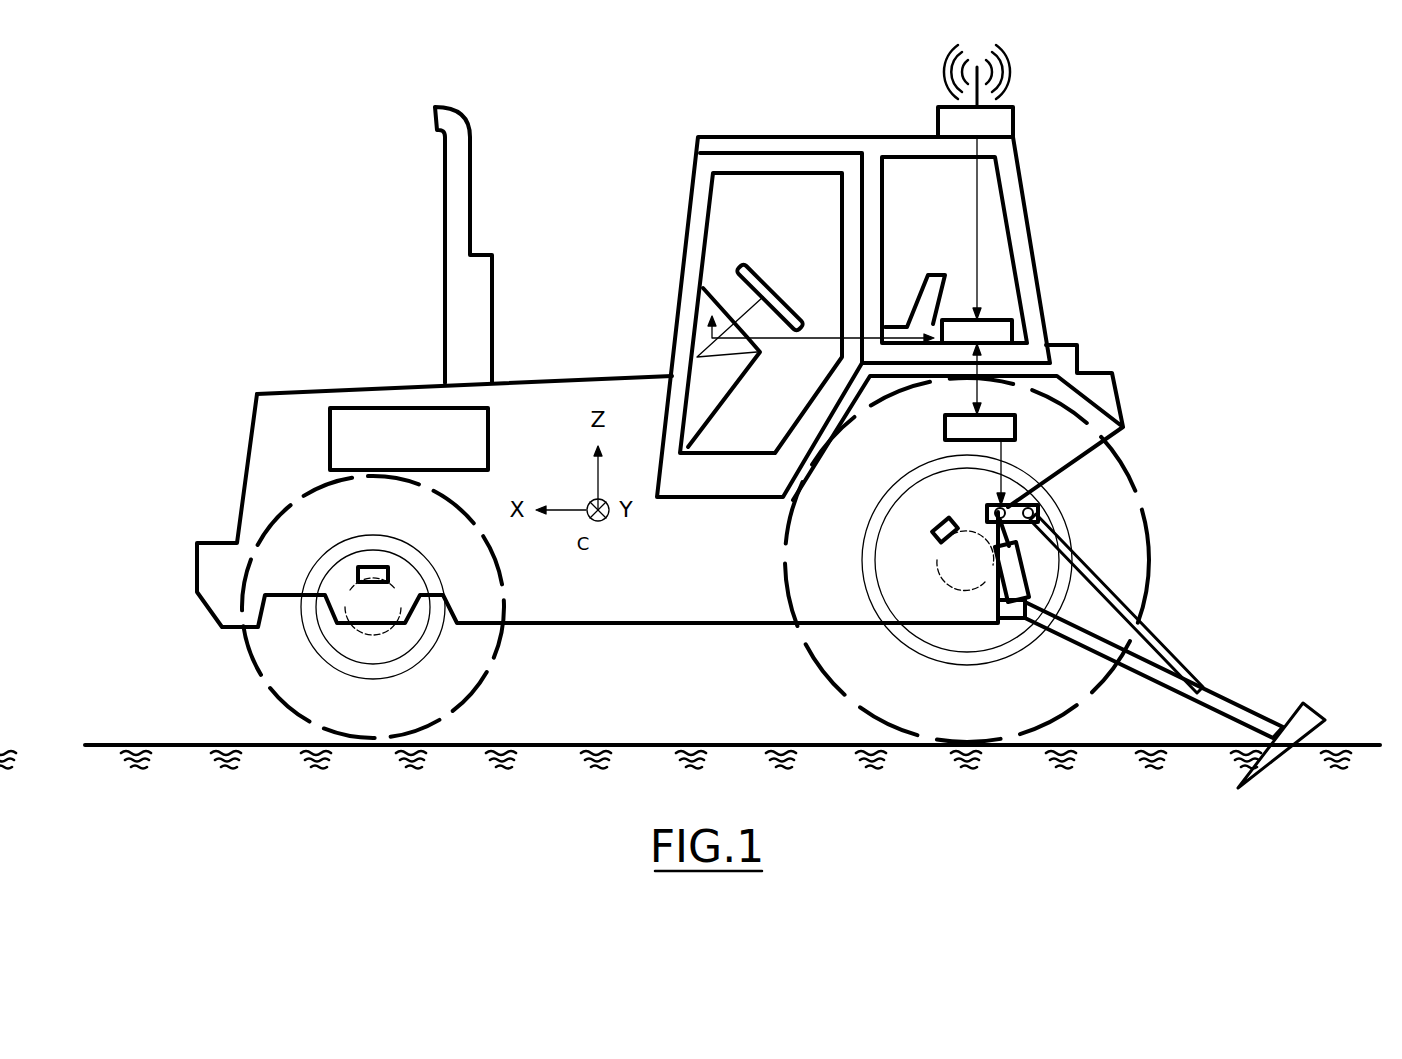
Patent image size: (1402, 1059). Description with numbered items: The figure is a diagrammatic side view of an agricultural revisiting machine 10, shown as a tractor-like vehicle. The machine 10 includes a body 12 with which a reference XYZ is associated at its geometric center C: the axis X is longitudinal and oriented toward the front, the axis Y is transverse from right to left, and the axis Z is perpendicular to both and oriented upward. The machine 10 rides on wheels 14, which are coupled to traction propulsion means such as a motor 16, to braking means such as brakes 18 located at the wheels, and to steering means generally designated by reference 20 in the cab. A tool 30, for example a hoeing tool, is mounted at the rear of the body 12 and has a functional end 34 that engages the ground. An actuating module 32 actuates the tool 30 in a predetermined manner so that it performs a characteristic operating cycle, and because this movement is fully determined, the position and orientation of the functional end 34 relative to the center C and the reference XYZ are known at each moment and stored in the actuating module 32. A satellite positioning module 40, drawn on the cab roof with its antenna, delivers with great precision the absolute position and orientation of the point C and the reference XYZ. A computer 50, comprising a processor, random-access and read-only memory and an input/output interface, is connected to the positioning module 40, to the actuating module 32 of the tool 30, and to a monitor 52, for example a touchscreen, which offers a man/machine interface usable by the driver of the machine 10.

The agricultural revisiting machine 10 is at (1192, 268).
The body 12 is at (1080, 345).
The wheels 14 is at (448, 677).
The motor 16 is at (409, 439).
The brakes 18 is at (373, 567).
The steering means 20 is at (789, 292).
The tool 30 is at (1159, 653).
The actuating module 32 is at (1012, 427).
The functional end 34 is at (1268, 756).
The satellite positioning module 40 is at (1010, 120).
The computer 50 is at (1006, 326).
The monitor 52 is at (718, 300).